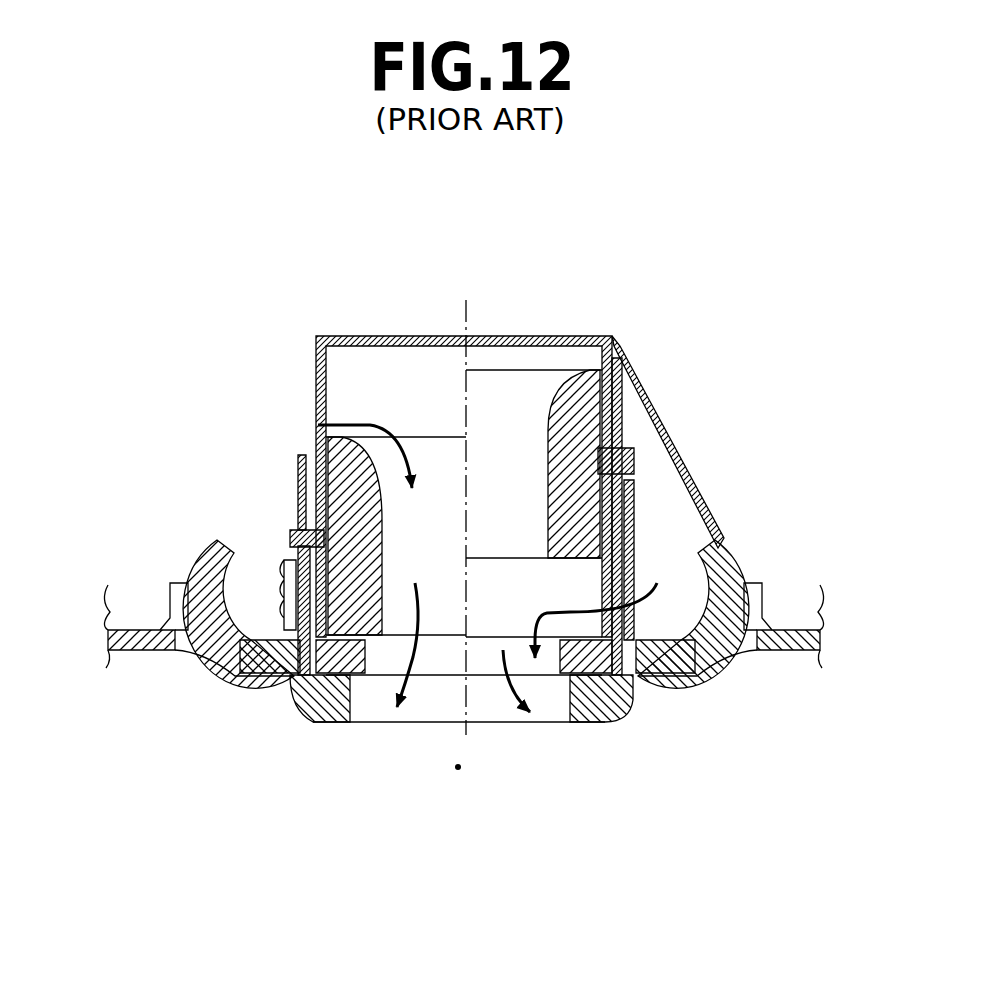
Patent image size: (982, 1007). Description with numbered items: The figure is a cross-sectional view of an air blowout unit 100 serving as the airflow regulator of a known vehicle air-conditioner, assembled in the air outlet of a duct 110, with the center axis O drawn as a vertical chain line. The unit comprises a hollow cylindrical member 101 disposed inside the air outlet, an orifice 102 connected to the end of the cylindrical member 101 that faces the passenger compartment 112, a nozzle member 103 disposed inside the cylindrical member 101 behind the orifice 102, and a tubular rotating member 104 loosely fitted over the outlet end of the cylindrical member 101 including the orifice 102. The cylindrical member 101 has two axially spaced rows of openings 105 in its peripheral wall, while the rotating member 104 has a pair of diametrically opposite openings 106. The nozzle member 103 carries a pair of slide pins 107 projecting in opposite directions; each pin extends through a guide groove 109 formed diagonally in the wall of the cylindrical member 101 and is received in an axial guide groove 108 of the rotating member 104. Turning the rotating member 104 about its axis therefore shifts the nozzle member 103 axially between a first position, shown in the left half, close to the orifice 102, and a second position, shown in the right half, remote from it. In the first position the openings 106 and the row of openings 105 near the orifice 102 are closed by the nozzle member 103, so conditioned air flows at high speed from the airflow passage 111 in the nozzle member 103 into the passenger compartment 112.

The air blowout unit 100 is at (252, 408).
The hollow cylindrical member 101 is at (356, 338).
The orifice 102 is at (372, 700).
The nozzle member 103 is at (340, 470).
The tubular rotating member 104 is at (302, 712).
The openings 105 is at (652, 588).
The openings 106 is at (715, 512).
The slide pins 107 is at (300, 530).
The axial guide groove 108 is at (640, 468).
The guide groove 109 is at (647, 395).
The duct 110 is at (125, 652).
The airflow passage 111 is at (436, 460).
The passenger compartment 112 is at (458, 767).
The center axis O is at (469, 502).